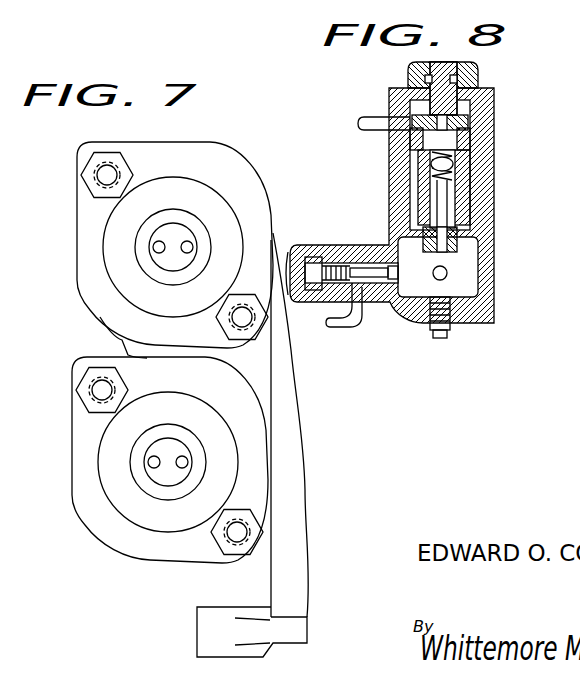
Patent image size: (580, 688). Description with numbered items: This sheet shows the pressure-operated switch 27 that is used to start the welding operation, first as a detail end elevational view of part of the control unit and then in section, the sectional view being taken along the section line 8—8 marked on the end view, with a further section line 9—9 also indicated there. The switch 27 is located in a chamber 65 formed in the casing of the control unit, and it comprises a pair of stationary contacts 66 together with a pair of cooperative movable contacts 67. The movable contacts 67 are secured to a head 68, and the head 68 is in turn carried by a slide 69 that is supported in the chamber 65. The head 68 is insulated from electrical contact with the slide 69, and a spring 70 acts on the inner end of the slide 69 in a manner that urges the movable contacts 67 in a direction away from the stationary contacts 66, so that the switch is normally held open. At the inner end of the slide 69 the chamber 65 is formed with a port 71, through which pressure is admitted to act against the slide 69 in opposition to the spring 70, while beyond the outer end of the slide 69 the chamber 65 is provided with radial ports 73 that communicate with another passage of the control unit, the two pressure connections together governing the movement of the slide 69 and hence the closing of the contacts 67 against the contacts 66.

In FIG. 7, the section line 8- 8 is at (100, 243).
In FIG. 7, the section line 9- 9 is at (340, 463).
In FIG. 8, the switch 27 is at (377, 172).
In FIG. 8, the chamber 65 is at (495, 142).
In FIG. 8, the stationary contacts 66 is at (430, 100).
In FIG. 8, the movable contacts 67 is at (495, 103).
In FIG. 8, the head 68 is at (392, 143).
In FIG. 8, the slide 69 is at (493, 182).
In FIG. 8, the spring 70 is at (488, 232).
In FIG. 8, the port 71 is at (450, 273).
In FIG. 8, the radial ports 73 is at (405, 101).